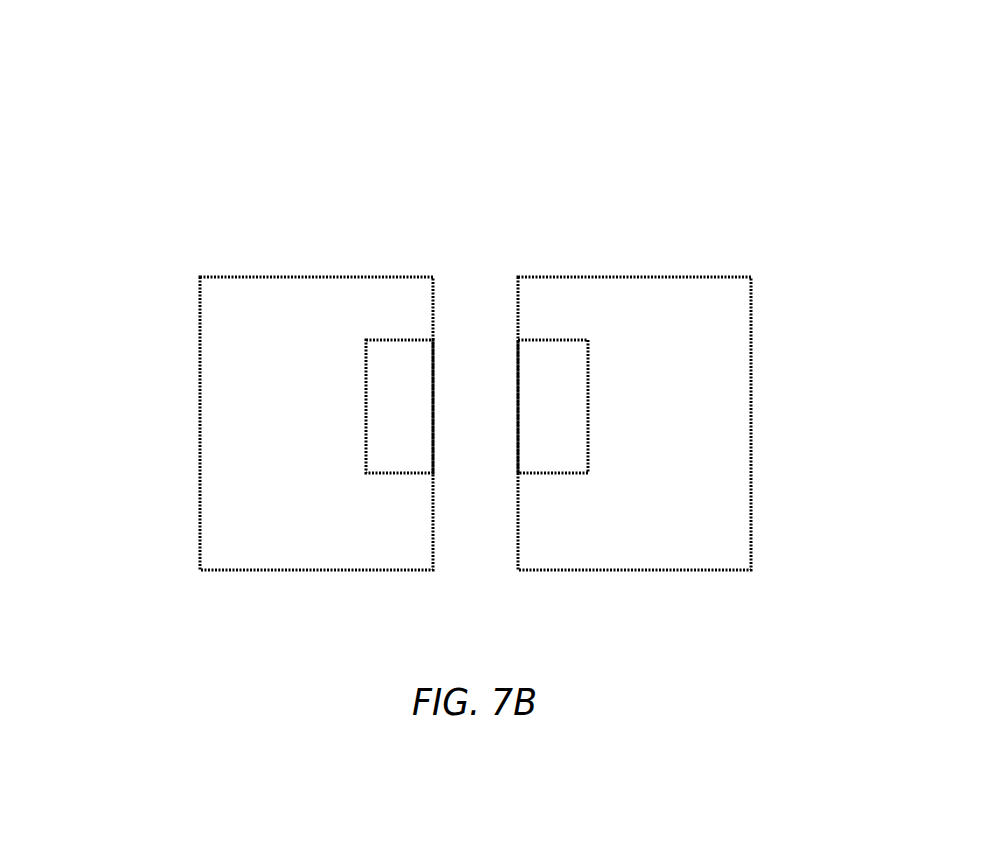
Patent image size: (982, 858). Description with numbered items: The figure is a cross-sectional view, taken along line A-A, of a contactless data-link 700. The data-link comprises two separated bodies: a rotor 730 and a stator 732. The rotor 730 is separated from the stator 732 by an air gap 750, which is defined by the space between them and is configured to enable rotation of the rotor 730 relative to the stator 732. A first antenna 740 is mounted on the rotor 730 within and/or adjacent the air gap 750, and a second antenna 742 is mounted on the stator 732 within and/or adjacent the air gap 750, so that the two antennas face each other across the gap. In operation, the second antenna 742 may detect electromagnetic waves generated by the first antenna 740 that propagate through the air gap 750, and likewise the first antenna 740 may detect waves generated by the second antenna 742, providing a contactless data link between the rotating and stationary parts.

The contactless data-link 700 is at (106, 46).
The stator 732 is at (307, 277).
The rotor 730 is at (640, 277).
The second antenna 742 is at (366, 415).
The first antenna 740 is at (588, 410).
The air gap 750 is at (470, 305).